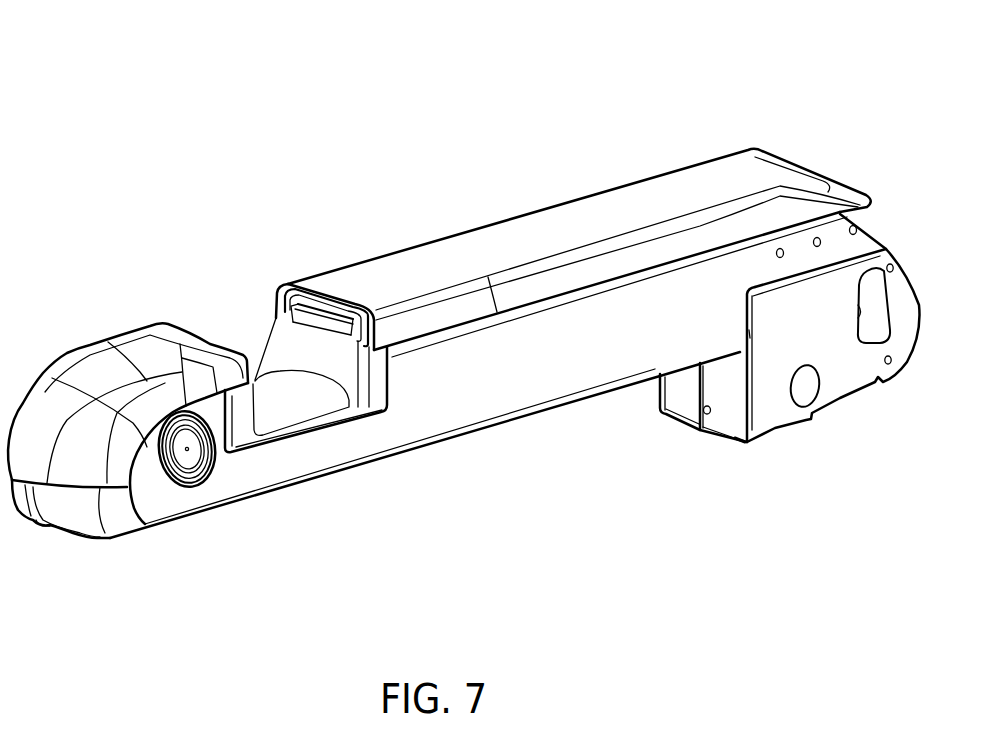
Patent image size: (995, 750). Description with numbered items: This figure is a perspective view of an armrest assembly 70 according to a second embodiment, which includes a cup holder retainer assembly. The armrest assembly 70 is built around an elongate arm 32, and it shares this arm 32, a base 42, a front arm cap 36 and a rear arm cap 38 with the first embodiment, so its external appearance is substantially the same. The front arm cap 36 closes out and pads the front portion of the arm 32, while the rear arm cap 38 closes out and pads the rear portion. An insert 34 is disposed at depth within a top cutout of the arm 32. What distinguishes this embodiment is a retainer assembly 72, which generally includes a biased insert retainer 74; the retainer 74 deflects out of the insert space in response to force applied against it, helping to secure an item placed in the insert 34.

The armrest assembly 70 is at (130, 95).
The arm 32 is at (452, 410).
The insert 34 is at (263, 398).
The front arm cap 36 is at (80, 362).
The rear arm cap 38 is at (590, 213).
The base 42 is at (833, 396).
The retainer assembly 72 is at (276, 311).
The biased insert retainer 74 is at (327, 304).